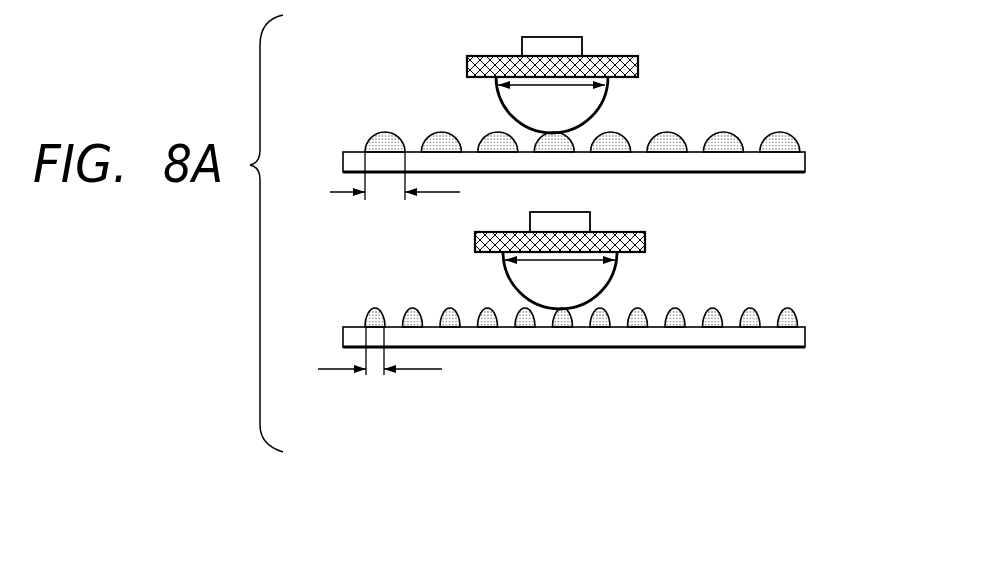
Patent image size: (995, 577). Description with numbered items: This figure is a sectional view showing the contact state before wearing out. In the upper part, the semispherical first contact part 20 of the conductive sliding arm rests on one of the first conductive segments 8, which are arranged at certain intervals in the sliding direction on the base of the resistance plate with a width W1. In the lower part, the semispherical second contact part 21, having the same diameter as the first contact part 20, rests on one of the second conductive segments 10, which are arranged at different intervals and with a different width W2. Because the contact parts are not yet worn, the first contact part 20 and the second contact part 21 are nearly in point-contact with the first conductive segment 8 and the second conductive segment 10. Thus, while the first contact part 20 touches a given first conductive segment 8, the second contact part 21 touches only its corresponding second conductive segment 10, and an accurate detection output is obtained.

The first contact part 20 is at (607, 108).
The second contact part 21 is at (607, 283).
The first conductive segments 8 is at (673, 135).
The second conductive segments 10 is at (677, 310).
The width W1 is at (385, 195).
The width W2 is at (375, 372).